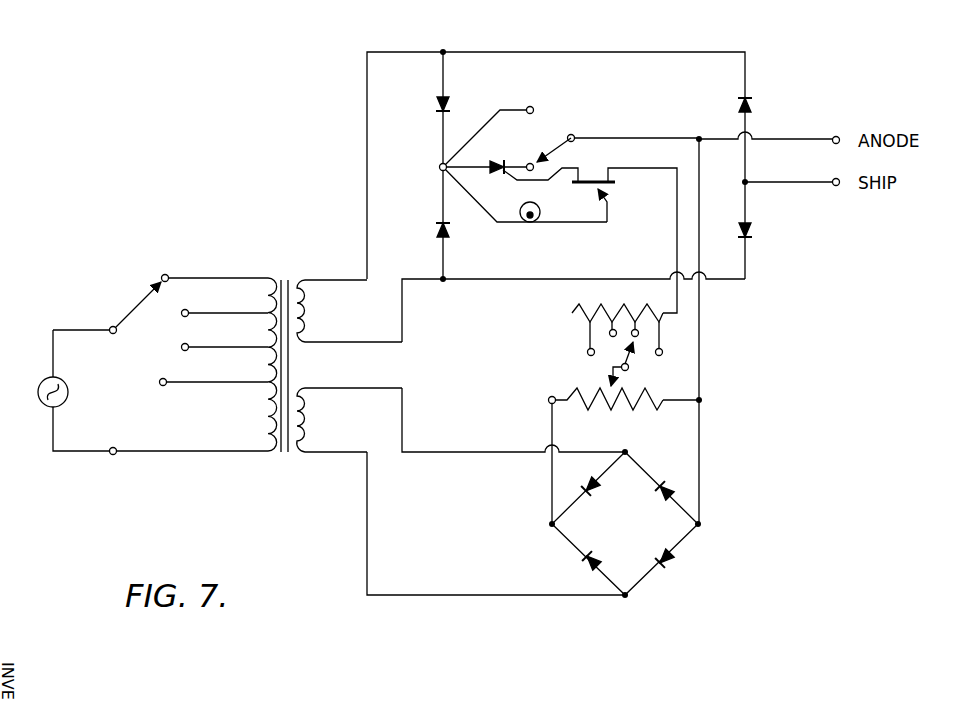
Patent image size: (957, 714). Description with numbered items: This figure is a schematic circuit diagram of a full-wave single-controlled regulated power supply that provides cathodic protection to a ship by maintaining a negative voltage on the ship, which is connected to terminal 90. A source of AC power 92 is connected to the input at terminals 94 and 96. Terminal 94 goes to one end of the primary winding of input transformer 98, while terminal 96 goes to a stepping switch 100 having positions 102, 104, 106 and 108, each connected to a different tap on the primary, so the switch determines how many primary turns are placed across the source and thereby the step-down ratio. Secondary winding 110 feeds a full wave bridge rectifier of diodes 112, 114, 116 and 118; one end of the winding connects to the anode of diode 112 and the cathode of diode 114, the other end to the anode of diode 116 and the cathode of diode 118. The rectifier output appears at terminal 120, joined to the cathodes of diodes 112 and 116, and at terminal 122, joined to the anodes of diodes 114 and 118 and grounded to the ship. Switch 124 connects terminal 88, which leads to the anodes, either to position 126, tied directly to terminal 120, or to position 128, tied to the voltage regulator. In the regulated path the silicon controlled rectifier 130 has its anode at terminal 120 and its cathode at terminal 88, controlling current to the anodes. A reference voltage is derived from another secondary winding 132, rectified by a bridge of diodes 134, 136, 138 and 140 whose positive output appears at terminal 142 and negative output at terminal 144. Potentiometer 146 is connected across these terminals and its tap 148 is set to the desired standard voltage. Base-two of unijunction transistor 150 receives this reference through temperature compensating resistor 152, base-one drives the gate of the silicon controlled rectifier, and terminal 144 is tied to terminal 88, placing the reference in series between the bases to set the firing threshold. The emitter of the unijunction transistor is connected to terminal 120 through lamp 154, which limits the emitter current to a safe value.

The terminal 88 is at (834, 135).
The terminal 90 is at (834, 187).
The source of AC power 92 is at (40, 380).
The terminal 94 is at (114, 449).
The terminal 96 is at (108, 329).
The input transformer 98 is at (283, 460).
The stepping switch 100 is at (124, 298).
The position 102 is at (166, 277).
The position 104 is at (186, 312).
The position 106 is at (186, 346).
The position 108 is at (164, 381).
The secondary winding 110 is at (313, 312).
The diode 112 is at (437, 101).
The diode 114 is at (752, 103).
The diode 116 is at (437, 226).
The diode 118 is at (752, 234).
The terminal 120 is at (438, 167).
The terminal 122 is at (750, 181).
The switch 124 is at (548, 133).
The position 126 is at (528, 106).
The position 128 is at (528, 164).
The silicon controlled rectifier 130 is at (497, 176).
The secondary winding 132 is at (311, 422).
The diode 134 is at (594, 489).
The diode 136 is at (662, 502).
The diode 138 is at (672, 561).
The diode 140 is at (585, 566).
The terminal 142 is at (550, 397).
The terminal 144 is at (705, 400).
The potentiometer 146 is at (635, 408).
The tap 148 is at (628, 370).
The unijunction transistor 150 is at (604, 192).
The resistor 152 is at (577, 309).
The lamp 154 is at (531, 223).